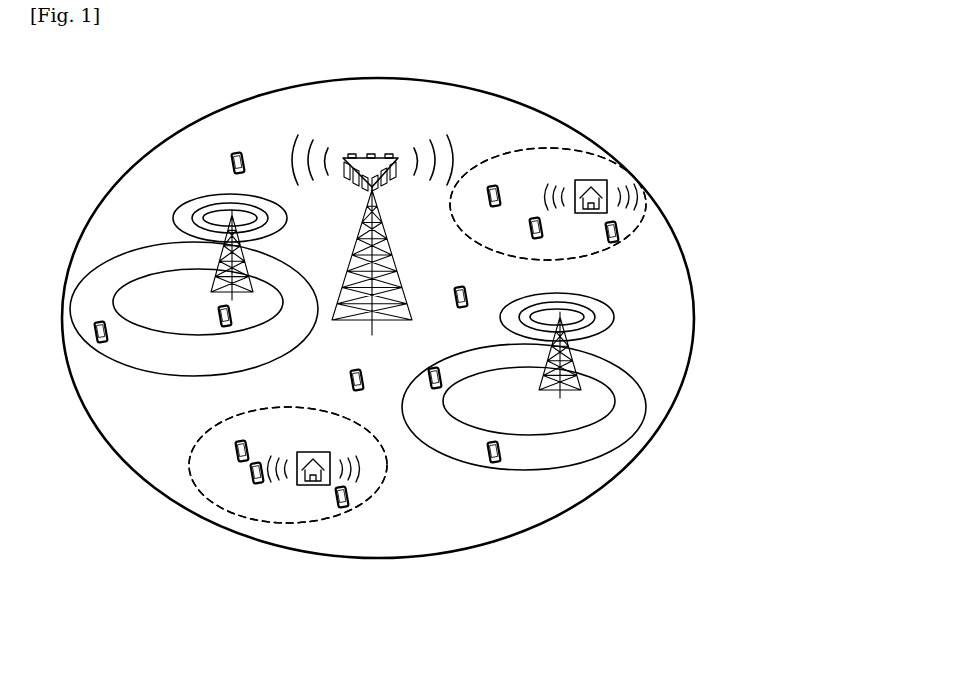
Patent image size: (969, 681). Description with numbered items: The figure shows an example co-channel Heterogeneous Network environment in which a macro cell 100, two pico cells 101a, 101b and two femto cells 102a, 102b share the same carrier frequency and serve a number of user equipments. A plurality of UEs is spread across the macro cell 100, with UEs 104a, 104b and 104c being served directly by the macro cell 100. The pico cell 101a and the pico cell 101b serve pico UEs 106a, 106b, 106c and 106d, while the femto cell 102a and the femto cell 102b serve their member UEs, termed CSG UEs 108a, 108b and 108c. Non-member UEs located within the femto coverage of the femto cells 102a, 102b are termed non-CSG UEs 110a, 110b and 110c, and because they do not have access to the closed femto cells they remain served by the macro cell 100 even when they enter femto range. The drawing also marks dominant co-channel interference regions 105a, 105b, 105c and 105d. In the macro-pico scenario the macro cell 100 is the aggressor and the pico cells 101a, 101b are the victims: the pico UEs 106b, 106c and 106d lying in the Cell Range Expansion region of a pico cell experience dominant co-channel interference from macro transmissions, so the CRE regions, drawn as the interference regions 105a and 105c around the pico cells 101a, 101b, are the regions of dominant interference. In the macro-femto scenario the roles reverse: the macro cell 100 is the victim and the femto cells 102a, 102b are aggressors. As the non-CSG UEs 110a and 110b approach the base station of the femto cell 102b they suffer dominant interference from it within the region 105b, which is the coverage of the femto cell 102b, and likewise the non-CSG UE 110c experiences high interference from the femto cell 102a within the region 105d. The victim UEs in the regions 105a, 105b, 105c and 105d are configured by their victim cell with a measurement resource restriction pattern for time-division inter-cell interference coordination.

The macro cell 100 is at (422, 121).
The pico cell 101a is at (178, 320).
The pico cell 101b is at (518, 420).
The femto cell 102a is at (603, 176).
The femto cell 102b is at (343, 437).
The UE 104a is at (232, 181).
The UE 104b is at (452, 314).
The UE 104c is at (347, 397).
The dominant co-channel interference region 105a is at (168, 360).
The dominant co-channel interference region 105b is at (273, 503).
The dominant co-channel interference region 105c is at (559, 466).
The dominant co-channel interference region 105d is at (510, 192).
The pico UE 106a is at (216, 334).
The pico UE 106b is at (140, 362).
The pico UE 106c is at (435, 418).
The pico UE 106d is at (478, 474).
The CSG UE 108a is at (197, 473).
The CSG UE 108b is at (645, 274).
The CSG UE 108c is at (565, 283).
The non-CSG UE 110a is at (200, 525).
The non-CSG UE 110b is at (337, 556).
The non-CSG UE 110c is at (492, 246).